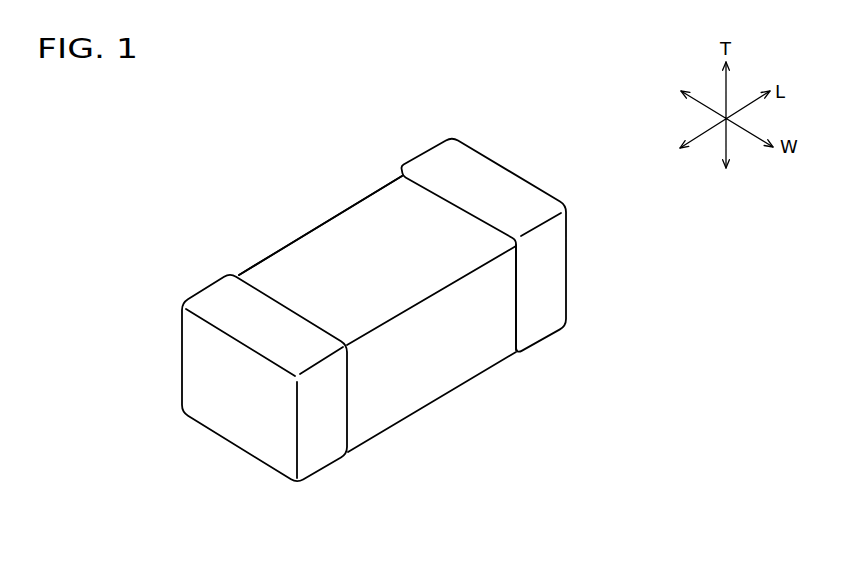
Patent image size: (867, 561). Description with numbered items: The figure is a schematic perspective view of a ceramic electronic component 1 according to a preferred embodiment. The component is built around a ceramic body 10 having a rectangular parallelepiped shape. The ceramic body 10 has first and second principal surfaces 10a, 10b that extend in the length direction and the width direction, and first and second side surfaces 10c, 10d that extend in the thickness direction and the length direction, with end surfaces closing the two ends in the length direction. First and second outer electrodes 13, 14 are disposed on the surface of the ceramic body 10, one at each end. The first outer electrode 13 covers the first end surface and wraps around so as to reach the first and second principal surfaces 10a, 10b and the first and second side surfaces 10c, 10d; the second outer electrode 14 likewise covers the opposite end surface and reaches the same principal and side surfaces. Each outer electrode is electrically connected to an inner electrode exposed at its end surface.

The ceramic electronic component 1 is at (373, 281).
The ceramic body 10 is at (377, 306).
The first principal surface 10a is at (355, 231).
The second principal surface 10b is at (417, 413).
The first side surface 10c is at (385, 185).
The second side surface 10d is at (373, 417).
The first outer electrode 13 is at (182, 350).
The second outer electrode 14 is at (567, 270).